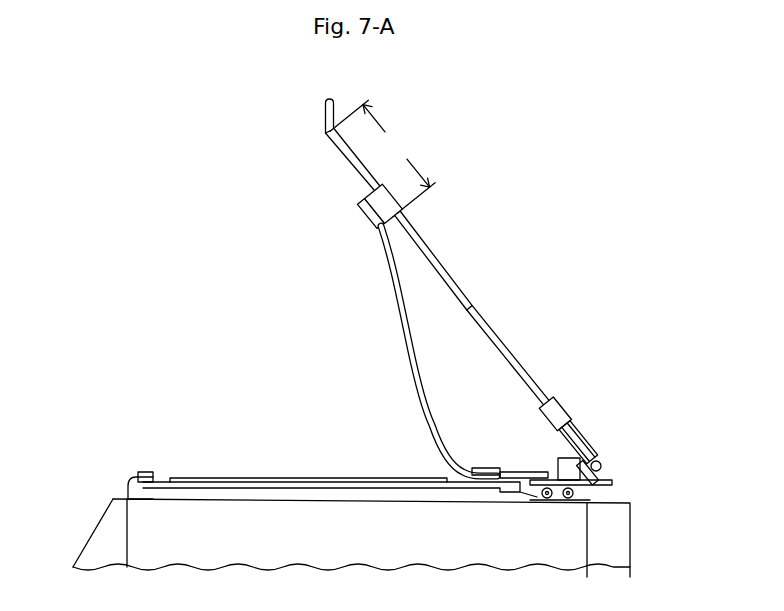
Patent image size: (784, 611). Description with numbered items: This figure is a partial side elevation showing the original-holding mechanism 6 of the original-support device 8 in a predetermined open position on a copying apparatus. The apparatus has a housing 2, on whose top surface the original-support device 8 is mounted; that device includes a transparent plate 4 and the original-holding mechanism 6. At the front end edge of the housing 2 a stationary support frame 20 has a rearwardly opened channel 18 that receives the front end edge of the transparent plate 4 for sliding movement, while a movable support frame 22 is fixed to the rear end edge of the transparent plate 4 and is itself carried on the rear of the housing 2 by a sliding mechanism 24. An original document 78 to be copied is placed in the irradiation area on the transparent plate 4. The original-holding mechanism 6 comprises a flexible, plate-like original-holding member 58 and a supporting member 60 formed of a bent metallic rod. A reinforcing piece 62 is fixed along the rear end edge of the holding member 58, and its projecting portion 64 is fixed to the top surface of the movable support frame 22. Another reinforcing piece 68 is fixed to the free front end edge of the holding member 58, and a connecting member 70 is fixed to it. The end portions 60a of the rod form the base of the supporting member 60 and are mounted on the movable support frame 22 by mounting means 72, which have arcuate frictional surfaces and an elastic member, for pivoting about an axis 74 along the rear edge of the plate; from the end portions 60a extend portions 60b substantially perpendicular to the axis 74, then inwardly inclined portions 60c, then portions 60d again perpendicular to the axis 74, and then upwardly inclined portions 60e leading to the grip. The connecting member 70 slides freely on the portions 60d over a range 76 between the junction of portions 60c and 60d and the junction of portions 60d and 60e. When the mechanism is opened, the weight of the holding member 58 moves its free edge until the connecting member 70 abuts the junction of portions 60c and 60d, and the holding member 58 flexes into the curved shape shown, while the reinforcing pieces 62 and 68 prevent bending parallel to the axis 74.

The housing 2 is at (632, 543).
The transparent plate 4 is at (245, 487).
The original-holding mechanism 6 is at (592, 372).
The original-support device 8 is at (177, 453).
The channel 18 is at (138, 473).
The stationary support frame 20 is at (128, 488).
The movable support frame 22 is at (612, 482).
The sliding mechanism 24 is at (553, 507).
The original-holding member 58 is at (404, 349).
The supporting member 60 is at (483, 317).
The end portions 60a is at (580, 424).
The portions extending forwardly 60b is at (527, 373).
The inwardly inclined portions 60c is at (433, 260).
The portions perpendicular to axis 60d is at (343, 163).
The upwardly inclined portions 60e is at (323, 118).
The reinforcing piece 62 is at (478, 468).
The projecting portion 64 is at (520, 472).
The reinforcing piece 68 is at (372, 217).
The connecting member 70 is at (365, 196).
The mounting means 72 is at (605, 455).
The axis 74 is at (590, 470).
The range 76 is at (382, 154).
The original document 78 is at (293, 475).